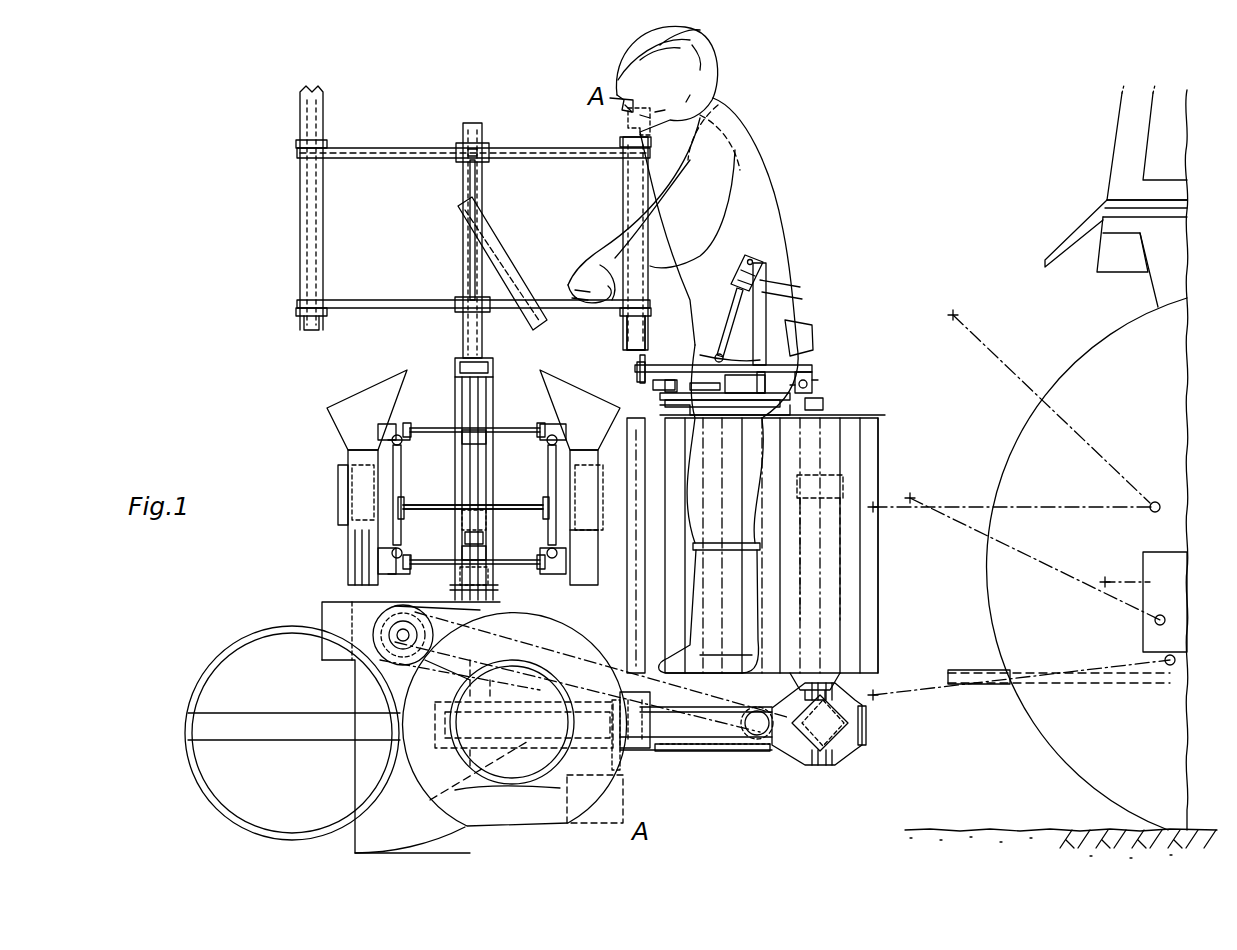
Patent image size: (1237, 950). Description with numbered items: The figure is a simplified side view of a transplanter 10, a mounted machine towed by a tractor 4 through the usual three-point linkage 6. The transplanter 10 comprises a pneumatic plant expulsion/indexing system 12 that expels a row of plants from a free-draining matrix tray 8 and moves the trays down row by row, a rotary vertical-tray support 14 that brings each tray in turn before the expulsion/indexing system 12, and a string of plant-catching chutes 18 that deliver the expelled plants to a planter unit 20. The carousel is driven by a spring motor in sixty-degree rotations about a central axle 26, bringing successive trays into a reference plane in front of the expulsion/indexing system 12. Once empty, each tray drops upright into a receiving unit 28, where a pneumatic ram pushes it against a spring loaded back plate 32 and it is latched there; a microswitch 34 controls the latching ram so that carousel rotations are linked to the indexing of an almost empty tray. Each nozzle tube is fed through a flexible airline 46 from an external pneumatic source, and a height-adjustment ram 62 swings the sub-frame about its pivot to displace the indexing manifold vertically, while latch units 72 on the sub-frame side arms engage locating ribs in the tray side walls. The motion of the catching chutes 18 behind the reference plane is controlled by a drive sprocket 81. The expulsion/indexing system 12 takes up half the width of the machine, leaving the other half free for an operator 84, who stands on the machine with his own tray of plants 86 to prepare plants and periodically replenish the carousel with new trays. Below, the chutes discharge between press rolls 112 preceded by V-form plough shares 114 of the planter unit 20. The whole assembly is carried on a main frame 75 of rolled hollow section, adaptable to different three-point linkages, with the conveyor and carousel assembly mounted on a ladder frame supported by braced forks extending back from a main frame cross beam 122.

The tractor 4 is at (1122, 147).
The three-point linkage 6 is at (1022, 364).
The free-draining matrix tray 8 is at (626, 333).
The transplanter 10 is at (290, 397).
The pneumatic plant expulsion/indexing system 12 is at (830, 358).
The rotary vertical-tray support 14 is at (386, 135).
The plant-catching chute 18 is at (340, 425).
The planter unit 20 is at (308, 604).
The central axle 26 is at (462, 262).
The receiving unit 28 is at (905, 448).
The spring loaded back plate 32 is at (877, 606).
The microswitch 34 is at (622, 617).
The flexible airline 46 is at (678, 378).
The height-adjustment ram 62 is at (720, 292).
The latch unit 72 is at (632, 371).
The main frame 75 is at (838, 563).
The drive sprocket 81 is at (510, 426).
The operator 84 is at (768, 170).
The tray of plants 86 is at (507, 275).
The press rolls 112 is at (228, 656).
The V-form plough share 114 is at (618, 805).
The main frame cross beam 122 is at (810, 730).